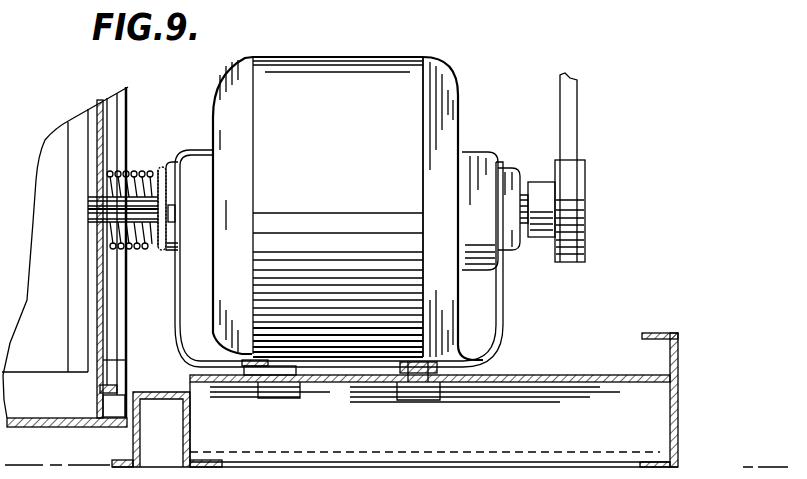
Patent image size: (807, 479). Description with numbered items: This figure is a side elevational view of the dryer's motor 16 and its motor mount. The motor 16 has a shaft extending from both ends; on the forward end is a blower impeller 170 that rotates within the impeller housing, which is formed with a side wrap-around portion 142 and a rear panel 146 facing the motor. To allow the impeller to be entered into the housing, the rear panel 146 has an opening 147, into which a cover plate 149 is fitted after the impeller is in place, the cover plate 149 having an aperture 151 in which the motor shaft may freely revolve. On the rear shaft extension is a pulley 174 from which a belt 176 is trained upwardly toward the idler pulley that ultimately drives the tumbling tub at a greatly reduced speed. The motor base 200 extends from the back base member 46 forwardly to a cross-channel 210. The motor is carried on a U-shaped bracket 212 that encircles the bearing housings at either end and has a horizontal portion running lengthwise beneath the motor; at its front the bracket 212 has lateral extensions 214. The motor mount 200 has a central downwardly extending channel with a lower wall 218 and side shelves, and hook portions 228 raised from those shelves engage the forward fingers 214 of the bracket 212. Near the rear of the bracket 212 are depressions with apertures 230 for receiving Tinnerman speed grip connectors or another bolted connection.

The motor 16 is at (358, 57).
The back base member 46 is at (674, 362).
The side wrap-around portion 142 is at (97, 427).
The rear panel 146 is at (97, 410).
The opening 147 is at (100, 388).
The cover plate 149 is at (100, 362).
The aperture 151 is at (125, 258).
The blower impeller 170 is at (58, 372).
The pulley 174 is at (582, 173).
The belt 176 is at (573, 127).
The motor base 200 is at (512, 370).
The cross-channel 210 is at (140, 452).
The U-shaped bracket 212 is at (505, 305).
The lateral extensions 214 is at (255, 373).
The lower wall 218 is at (589, 440).
The hook portions 228 is at (287, 367).
The depressions with apertures 230 is at (427, 380).